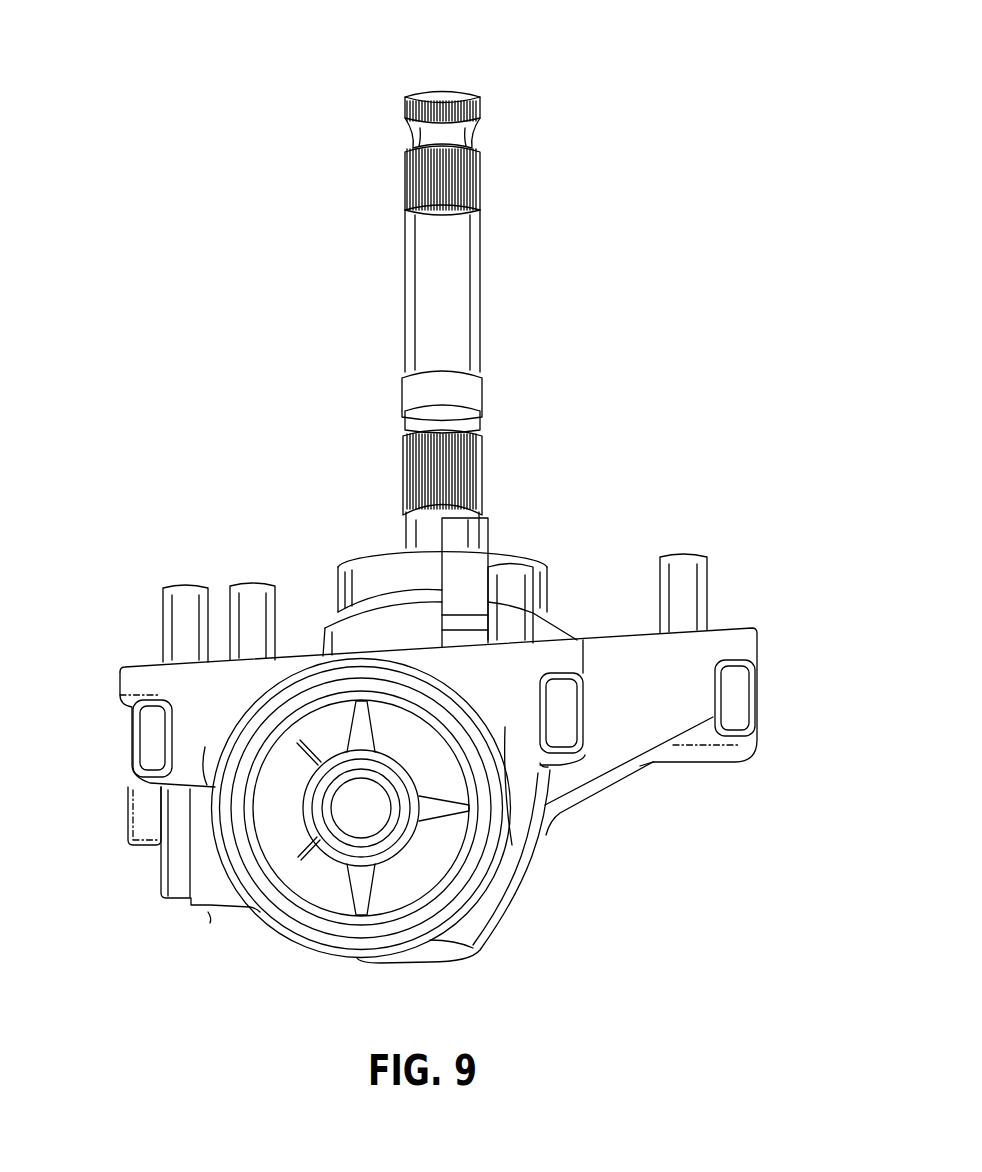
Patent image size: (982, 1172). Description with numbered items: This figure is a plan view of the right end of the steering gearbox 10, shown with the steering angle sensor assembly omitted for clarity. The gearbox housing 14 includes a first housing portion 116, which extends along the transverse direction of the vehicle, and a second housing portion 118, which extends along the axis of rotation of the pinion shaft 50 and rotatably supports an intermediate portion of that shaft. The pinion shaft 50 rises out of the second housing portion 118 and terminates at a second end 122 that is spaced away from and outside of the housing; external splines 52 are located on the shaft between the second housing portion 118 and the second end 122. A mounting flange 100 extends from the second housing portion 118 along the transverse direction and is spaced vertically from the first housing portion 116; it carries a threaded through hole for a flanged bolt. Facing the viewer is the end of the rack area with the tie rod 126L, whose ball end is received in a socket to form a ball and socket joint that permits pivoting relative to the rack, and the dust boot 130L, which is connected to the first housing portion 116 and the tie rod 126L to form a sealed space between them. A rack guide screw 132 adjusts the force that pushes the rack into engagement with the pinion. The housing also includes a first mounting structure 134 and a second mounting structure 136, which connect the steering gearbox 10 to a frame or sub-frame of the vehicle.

The steering gearbox 10 is at (421, 80).
The gearbox housing 14 is at (755, 700).
The pinion shaft 50 is at (481, 313).
The external splines 52 is at (482, 464).
The mounting flange 100 is at (490, 538).
The first housing portion 116 is at (212, 908).
The second housing portion 118 is at (338, 586).
The second end 122 is at (483, 112).
The tie rod 126L is at (353, 835).
The dust boot 130L is at (497, 867).
The rack guide screw 132 is at (127, 830).
The first mounting structure 134 is at (143, 735).
The second mounting structure 136 is at (705, 763).